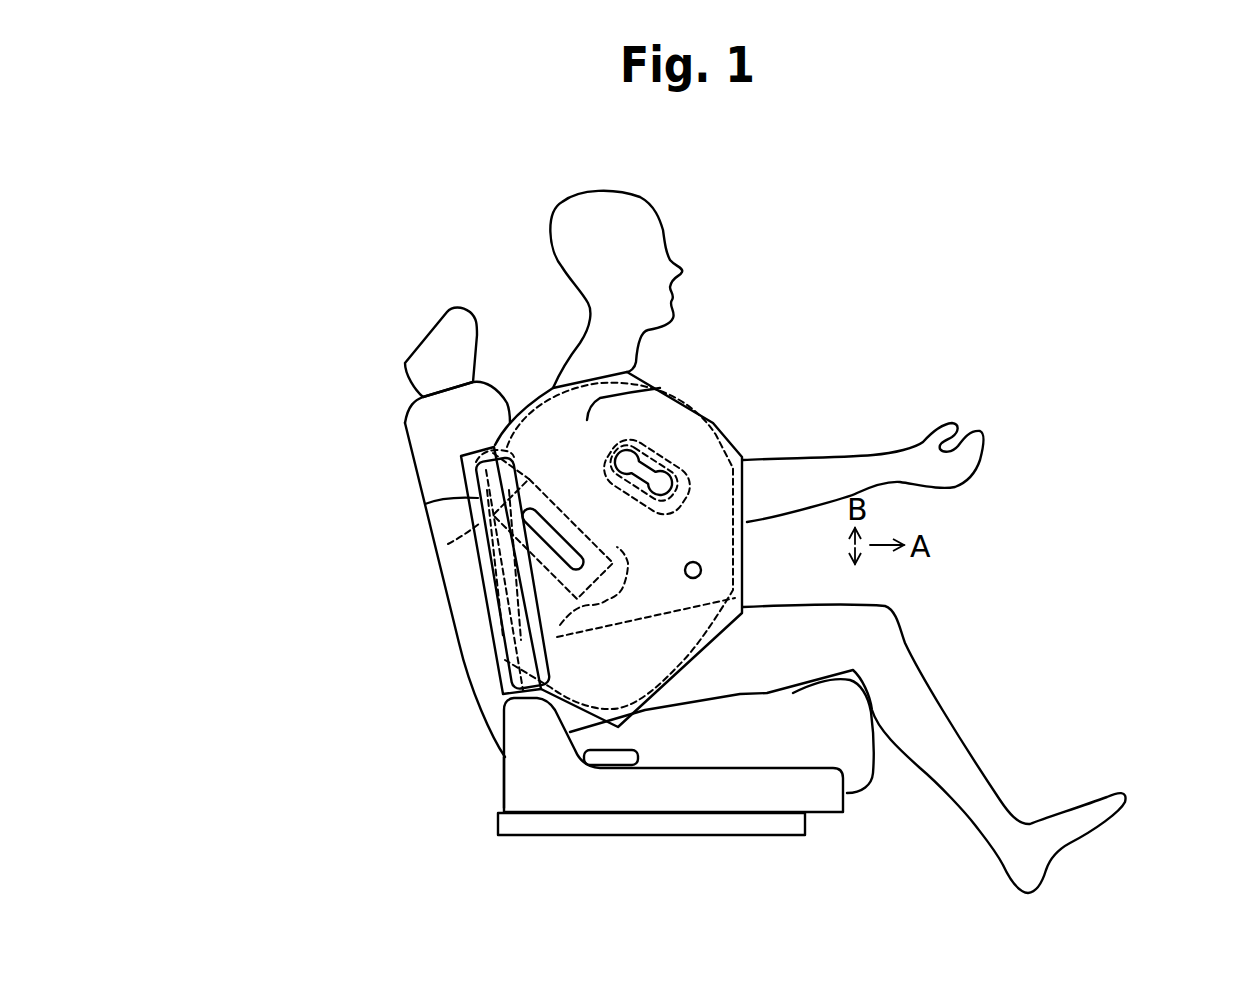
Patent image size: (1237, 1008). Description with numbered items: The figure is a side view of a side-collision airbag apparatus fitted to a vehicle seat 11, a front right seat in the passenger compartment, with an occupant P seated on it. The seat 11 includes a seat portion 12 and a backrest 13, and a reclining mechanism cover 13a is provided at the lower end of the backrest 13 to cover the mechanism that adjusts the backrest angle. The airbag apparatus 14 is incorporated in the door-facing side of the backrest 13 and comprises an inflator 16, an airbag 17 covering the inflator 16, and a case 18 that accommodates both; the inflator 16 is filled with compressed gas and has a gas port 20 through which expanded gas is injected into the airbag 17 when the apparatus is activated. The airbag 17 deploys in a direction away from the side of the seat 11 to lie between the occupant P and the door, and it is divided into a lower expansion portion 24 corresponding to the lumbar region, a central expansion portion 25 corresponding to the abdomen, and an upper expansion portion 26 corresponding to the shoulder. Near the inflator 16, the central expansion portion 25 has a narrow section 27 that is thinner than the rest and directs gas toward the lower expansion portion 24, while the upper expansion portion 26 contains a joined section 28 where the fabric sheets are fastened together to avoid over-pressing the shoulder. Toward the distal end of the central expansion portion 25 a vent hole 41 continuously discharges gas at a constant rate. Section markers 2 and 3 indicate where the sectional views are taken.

The section line of FIG. 2 is at (573, 183).
The section line of FIG. 3 is at (342, 560).
The seat 11 is at (355, 383).
The seat portion 12 is at (865, 778).
The backrest 13 is at (423, 453).
The reclining mechanism cover 13a is at (522, 792).
The airbag apparatus 14 is at (432, 687).
The inflator 16 is at (448, 544).
The airbag 17 is at (707, 417).
The case 18 is at (425, 504).
The gas port 20 is at (498, 646).
The lower expansion portion 24 is at (670, 660).
The central expansion portion 25 is at (668, 543).
The upper expansion portion 26 is at (660, 388).
The narrow section 27 is at (560, 538).
The joined section 28 is at (647, 463).
The vent hole 41 is at (701, 573).
The occupant P is at (733, 242).